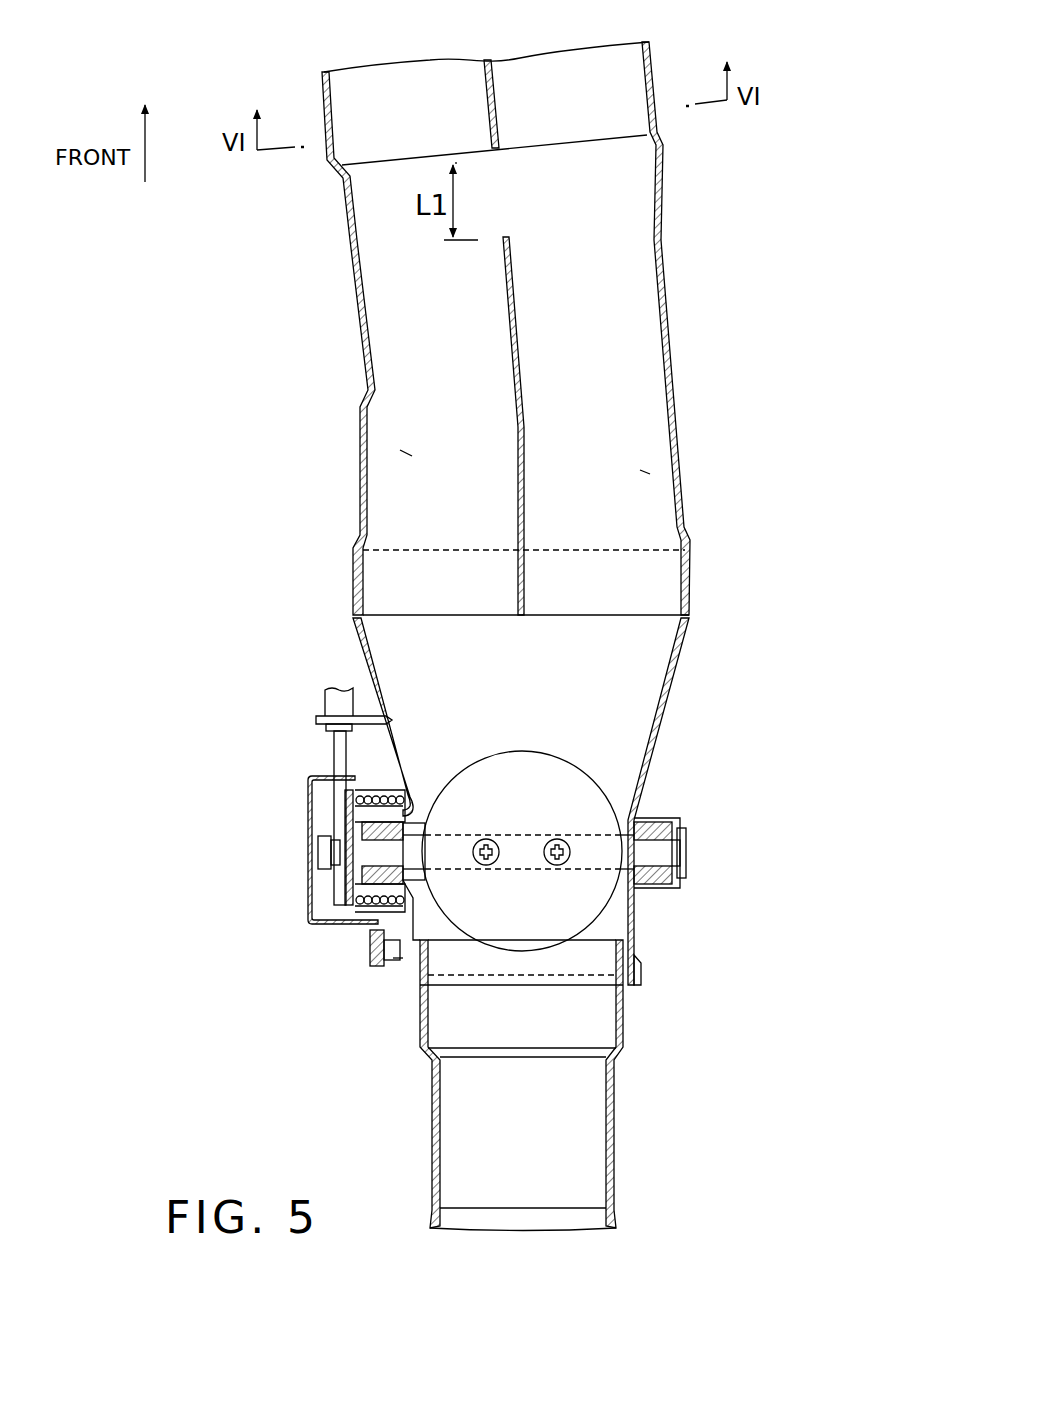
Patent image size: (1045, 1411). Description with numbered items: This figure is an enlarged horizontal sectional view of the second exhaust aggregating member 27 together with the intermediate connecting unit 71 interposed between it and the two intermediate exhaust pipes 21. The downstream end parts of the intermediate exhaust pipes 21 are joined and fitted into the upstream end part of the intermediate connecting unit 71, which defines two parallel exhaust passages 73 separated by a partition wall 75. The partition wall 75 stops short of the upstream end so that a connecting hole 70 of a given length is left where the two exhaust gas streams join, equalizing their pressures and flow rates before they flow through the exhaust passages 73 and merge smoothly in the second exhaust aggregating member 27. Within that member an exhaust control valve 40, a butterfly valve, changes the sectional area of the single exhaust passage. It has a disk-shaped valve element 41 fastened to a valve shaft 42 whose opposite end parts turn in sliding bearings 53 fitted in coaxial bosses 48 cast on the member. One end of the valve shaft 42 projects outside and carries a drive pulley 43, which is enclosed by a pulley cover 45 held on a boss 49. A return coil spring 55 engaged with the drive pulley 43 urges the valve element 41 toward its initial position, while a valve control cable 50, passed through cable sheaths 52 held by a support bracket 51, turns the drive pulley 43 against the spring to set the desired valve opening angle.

The intermediate exhaust pipe 21 is at (322, 78).
The second exhaust aggregating member 27 is at (368, 660).
The exhaust control valve 40 is at (602, 770).
The valve element 41 is at (600, 930).
The valve shaft 42 is at (686, 852).
The drive pulley 43 is at (350, 925).
The pulley cover 45 is at (308, 878).
The boss 48 is at (660, 823).
The boss 49 is at (393, 960).
The valve control cable 50 is at (334, 752).
The support bracket 51 is at (318, 718).
The cable sheath 52 is at (325, 693).
The sliding bearing 53 is at (372, 858).
The return coil spring 55 is at (376, 800).
The connecting hole 70 is at (500, 200).
The intermediate connecting unit 71 is at (340, 337).
The exhaust passage 73 is at (412, 455).
The partition wall 75 is at (527, 432).